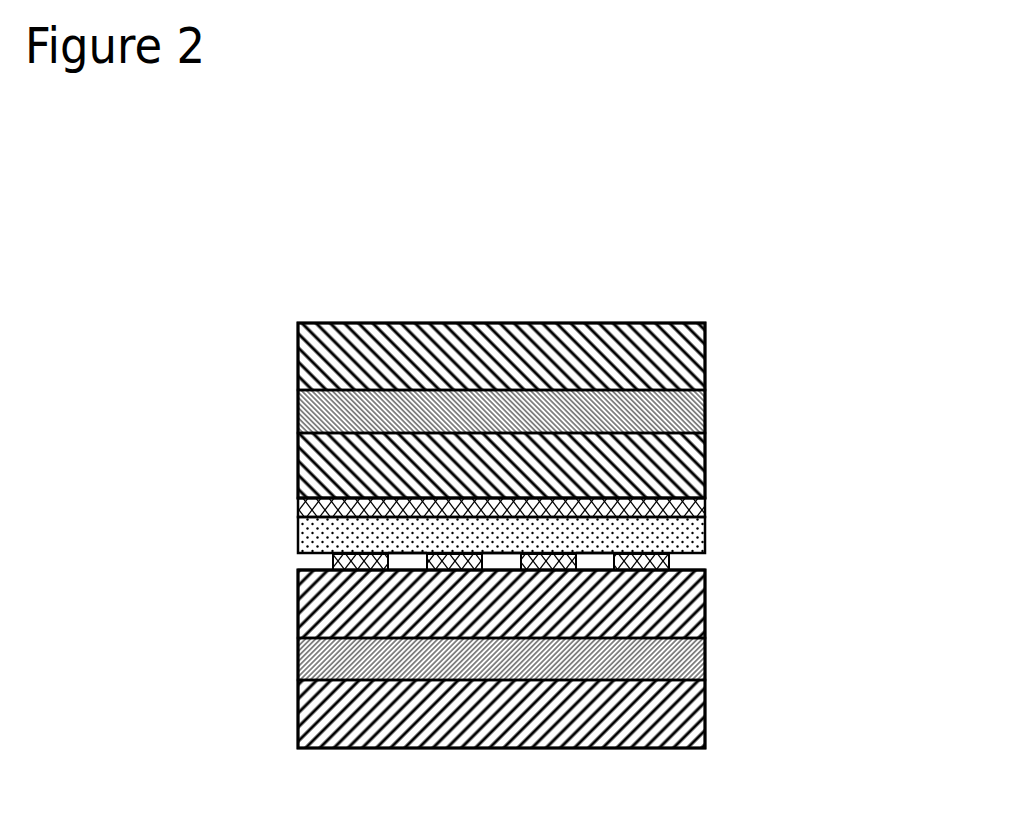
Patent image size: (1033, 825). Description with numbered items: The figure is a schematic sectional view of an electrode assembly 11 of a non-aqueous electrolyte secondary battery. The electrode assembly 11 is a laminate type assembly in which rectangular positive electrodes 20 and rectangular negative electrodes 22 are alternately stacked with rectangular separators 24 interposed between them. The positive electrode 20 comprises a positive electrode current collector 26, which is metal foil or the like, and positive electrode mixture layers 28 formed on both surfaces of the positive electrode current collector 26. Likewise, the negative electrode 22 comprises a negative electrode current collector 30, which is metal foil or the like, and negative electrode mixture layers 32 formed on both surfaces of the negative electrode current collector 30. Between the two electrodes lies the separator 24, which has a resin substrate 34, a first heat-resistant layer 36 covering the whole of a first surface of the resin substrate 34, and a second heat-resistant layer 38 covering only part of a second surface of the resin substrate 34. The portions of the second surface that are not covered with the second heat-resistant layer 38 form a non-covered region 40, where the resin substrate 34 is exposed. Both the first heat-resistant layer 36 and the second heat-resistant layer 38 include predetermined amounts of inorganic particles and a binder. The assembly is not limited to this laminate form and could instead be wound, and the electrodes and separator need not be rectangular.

The electrode assembly 11 is at (724, 257).
The positive electrode 20 is at (188, 337).
The negative electrode 22 is at (185, 590).
The separator 24 is at (810, 478).
The positive electrode current collector 26 is at (298, 418).
The positive electrode mixture layer 28 is at (298, 361).
The negative electrode current collector 30 is at (298, 667).
The negative electrode mixture layer 32 is at (298, 615).
The resin substrate 34 is at (705, 538).
The first heat-resistant layer 36 is at (705, 507).
The second heat-resistant layer 38 is at (669, 565).
The non-covered region 40 is at (602, 563).